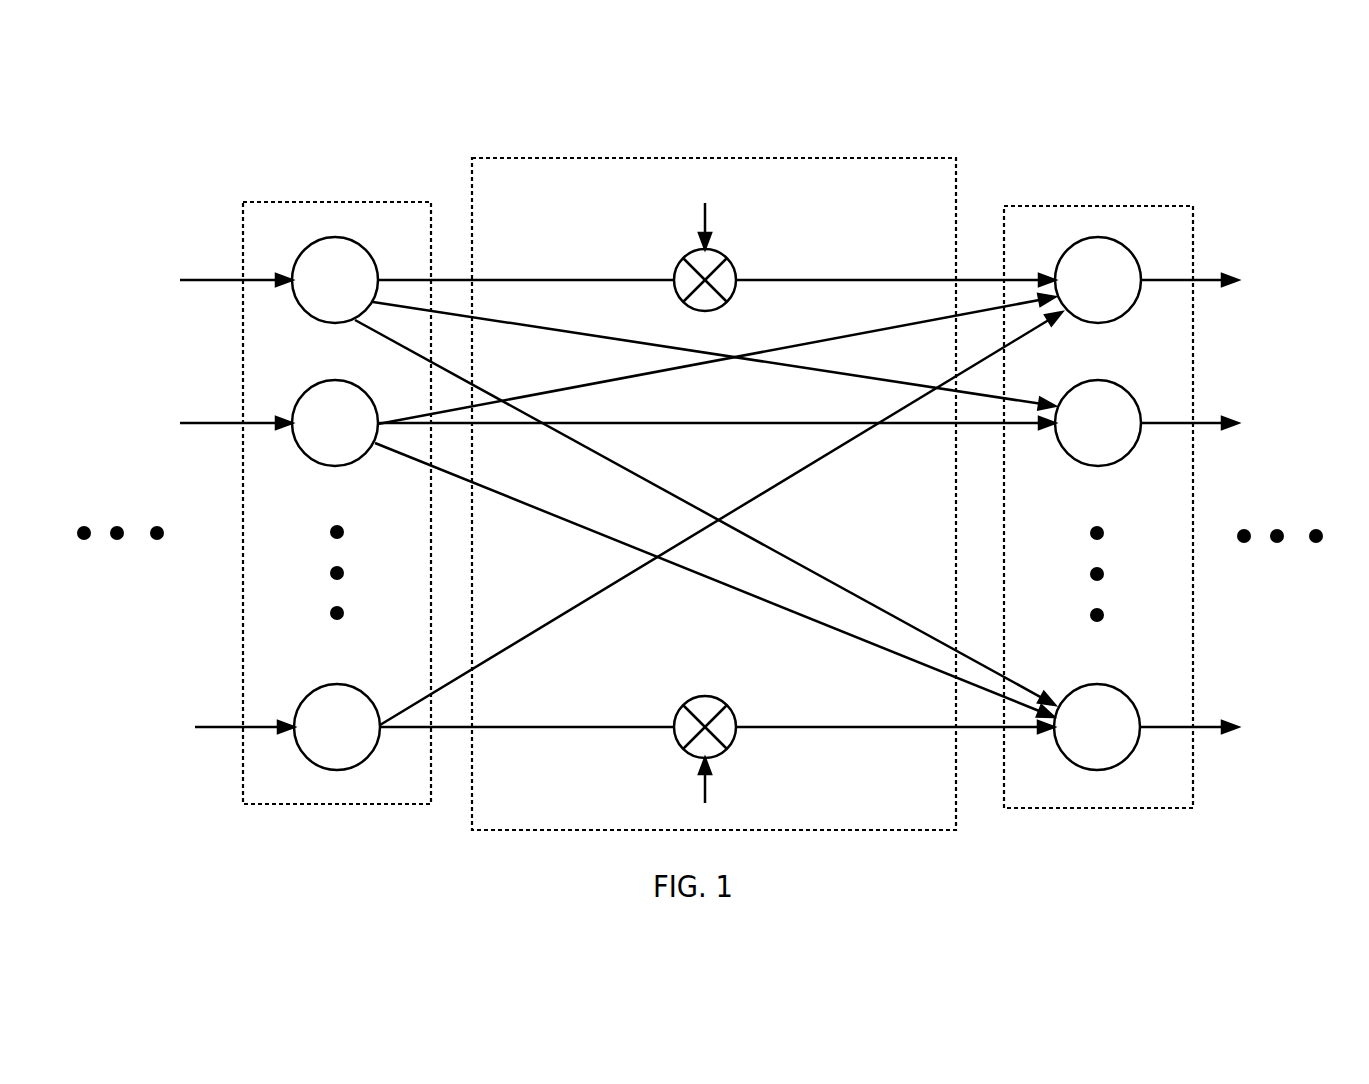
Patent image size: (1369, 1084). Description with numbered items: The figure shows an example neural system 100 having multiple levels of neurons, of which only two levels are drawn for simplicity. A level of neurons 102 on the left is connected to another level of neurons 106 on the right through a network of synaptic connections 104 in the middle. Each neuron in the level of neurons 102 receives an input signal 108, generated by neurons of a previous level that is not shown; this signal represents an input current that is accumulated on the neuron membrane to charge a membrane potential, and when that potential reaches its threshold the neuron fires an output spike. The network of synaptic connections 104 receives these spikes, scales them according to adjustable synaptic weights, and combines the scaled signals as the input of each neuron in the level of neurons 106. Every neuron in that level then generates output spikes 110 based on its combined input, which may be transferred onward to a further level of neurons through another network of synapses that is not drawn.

The neural system 100 is at (181, 142).
The level of neurons 102 is at (293, 201).
The network of synaptic connections 104 is at (890, 157).
The level of neurons 106 is at (1086, 205).
The input signal 108 is at (155, 707).
The output spikes 110 is at (1282, 243).